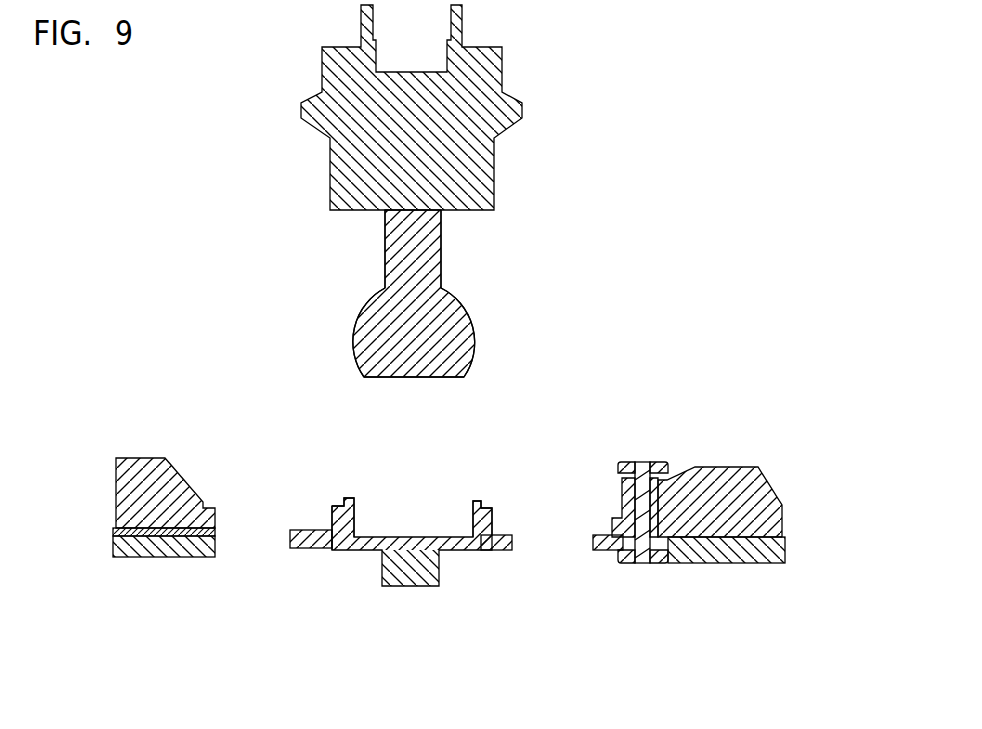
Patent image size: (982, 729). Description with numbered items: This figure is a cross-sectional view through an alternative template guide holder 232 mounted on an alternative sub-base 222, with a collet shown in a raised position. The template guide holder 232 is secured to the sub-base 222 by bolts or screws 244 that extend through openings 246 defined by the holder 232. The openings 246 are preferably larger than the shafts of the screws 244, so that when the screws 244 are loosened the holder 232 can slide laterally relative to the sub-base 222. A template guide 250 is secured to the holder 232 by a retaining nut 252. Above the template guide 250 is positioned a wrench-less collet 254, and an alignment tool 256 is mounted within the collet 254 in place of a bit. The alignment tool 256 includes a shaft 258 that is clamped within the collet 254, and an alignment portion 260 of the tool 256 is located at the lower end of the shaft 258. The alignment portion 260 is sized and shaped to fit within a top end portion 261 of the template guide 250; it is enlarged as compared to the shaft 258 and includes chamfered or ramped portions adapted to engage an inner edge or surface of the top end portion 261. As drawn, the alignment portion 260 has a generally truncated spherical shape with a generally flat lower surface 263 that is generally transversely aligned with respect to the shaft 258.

The sub-base 222 is at (772, 478).
The template guide holder 232 is at (508, 532).
The screws 244 is at (650, 557).
The openings 246 is at (618, 548).
The template guide 250 is at (382, 562).
The retaining nut 252 is at (493, 507).
The wrench-less collet 254 is at (497, 172).
The alignment tool 256 is at (448, 255).
The shaft 258 is at (385, 270).
The alignment portion 260 is at (353, 332).
The top end portion 261 is at (353, 512).
The flat lower surface 263 is at (447, 377).